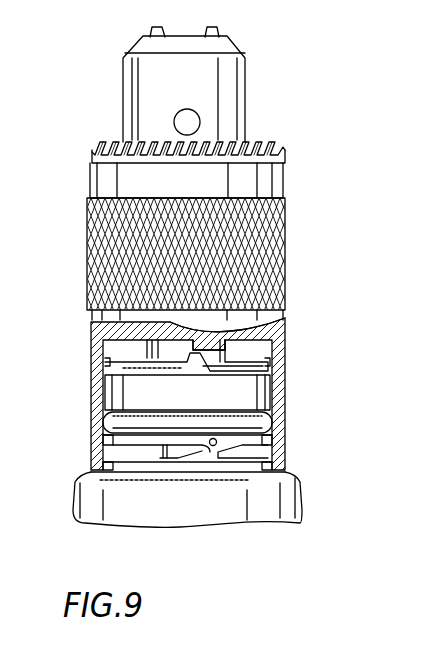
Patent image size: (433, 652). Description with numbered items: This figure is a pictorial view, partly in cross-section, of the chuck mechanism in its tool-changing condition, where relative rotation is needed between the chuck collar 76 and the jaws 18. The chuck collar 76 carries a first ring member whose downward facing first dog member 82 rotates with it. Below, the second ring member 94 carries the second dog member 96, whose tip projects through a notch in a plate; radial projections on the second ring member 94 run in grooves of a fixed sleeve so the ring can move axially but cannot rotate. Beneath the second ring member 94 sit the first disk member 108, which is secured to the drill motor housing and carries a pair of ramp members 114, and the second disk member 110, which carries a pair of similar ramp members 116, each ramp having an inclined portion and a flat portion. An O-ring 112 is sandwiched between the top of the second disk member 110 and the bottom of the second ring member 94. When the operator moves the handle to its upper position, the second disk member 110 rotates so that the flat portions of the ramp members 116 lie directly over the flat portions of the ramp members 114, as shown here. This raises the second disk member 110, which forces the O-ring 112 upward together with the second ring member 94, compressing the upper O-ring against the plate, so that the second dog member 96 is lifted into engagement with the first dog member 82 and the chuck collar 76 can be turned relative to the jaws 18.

The jaws 18 is at (218, 28).
The chuck collar 76 is at (88, 173).
The first dog member 82 is at (227, 343).
The second ring member 94 is at (100, 388).
The second dog member 96 is at (190, 372).
The first disk member 108 is at (272, 462).
The second disk member 110 is at (115, 445).
The O-ring 112 is at (108, 422).
The ramp member 114 is at (212, 455).
The ramp member 116 is at (222, 442).